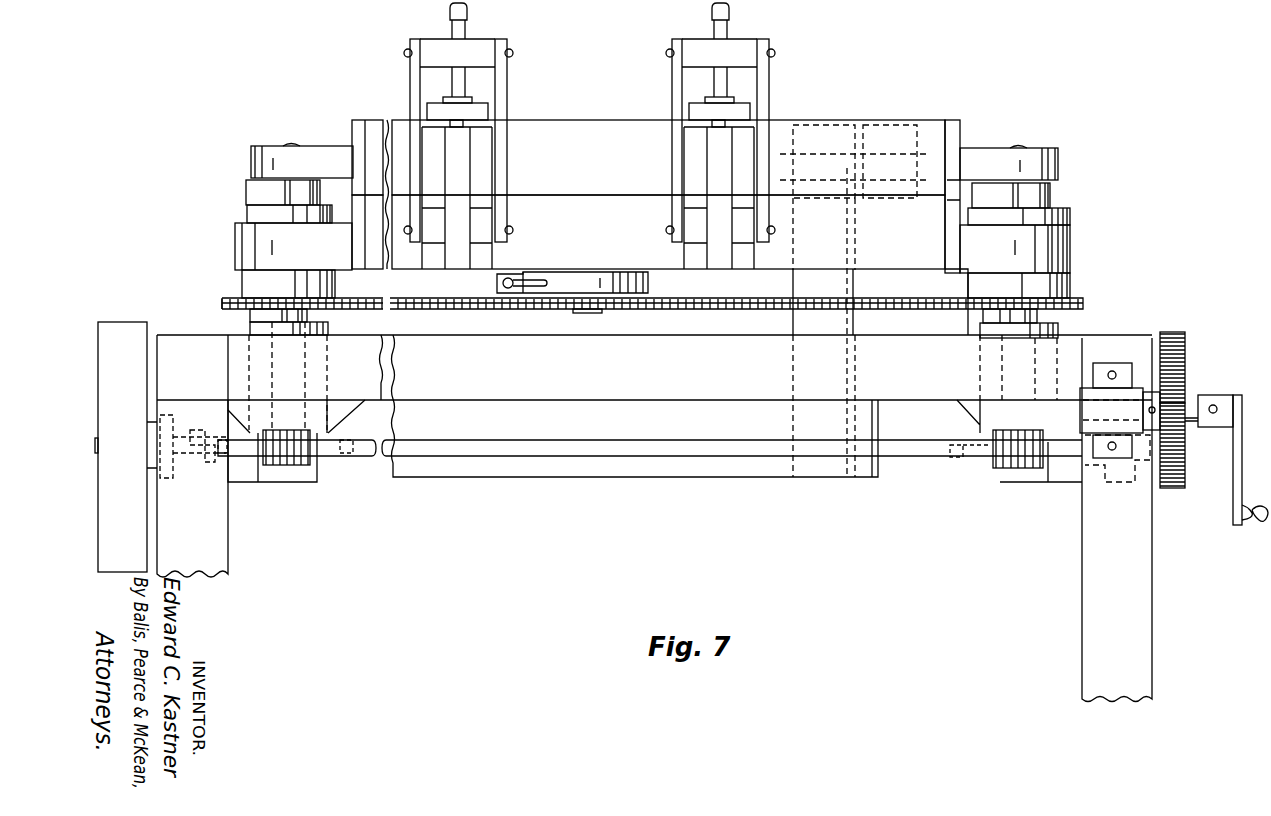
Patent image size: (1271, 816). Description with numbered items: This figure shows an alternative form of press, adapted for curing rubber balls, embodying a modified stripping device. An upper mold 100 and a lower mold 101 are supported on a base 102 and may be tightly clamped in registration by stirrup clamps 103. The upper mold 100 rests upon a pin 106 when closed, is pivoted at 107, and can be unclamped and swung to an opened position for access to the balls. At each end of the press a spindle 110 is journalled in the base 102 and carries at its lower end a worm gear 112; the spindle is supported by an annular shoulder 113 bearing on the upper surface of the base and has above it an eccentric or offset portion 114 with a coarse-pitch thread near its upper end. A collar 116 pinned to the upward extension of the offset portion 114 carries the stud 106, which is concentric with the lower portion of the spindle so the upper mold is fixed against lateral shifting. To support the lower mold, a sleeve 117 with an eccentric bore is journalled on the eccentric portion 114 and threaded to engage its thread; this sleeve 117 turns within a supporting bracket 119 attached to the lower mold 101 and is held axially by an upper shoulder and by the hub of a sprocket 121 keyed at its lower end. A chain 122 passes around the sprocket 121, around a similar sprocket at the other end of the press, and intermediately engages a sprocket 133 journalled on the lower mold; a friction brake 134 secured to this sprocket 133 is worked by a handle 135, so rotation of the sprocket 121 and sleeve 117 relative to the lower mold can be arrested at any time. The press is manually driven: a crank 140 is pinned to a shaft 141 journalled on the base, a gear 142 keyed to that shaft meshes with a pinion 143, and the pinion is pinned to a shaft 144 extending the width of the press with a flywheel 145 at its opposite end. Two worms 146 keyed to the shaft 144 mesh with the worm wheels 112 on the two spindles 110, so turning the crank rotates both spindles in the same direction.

The upper mold 100 is at (656, 196).
The lower mold 101 is at (648, 232).
The base 102 is at (654, 406).
The stirrup clamps 103 is at (477, 108).
The pin 106 is at (290, 144).
The pivot 107 is at (870, 160).
The spindle 110 is at (275, 372).
The worm gear 112 is at (333, 455).
The annular shoulder 113 is at (318, 330).
The eccentric portion 114 is at (258, 313).
The collar 116 is at (256, 190).
The sleeve 117 is at (251, 217).
The supporting bracket 119 is at (245, 240).
The sprocket 121 is at (250, 292).
The chain 122 is at (748, 310).
The sprocket 133 is at (605, 298).
The friction brake 134 is at (650, 283).
The handle 135 is at (503, 283).
The crank 140 is at (1233, 502).
The shaft 141 is at (1188, 405).
The gear 142 is at (1186, 357).
The pinion 143 is at (1185, 468).
The shaft 144 is at (913, 452).
The flywheel 145 is at (137, 325).
The worms 146 is at (287, 465).